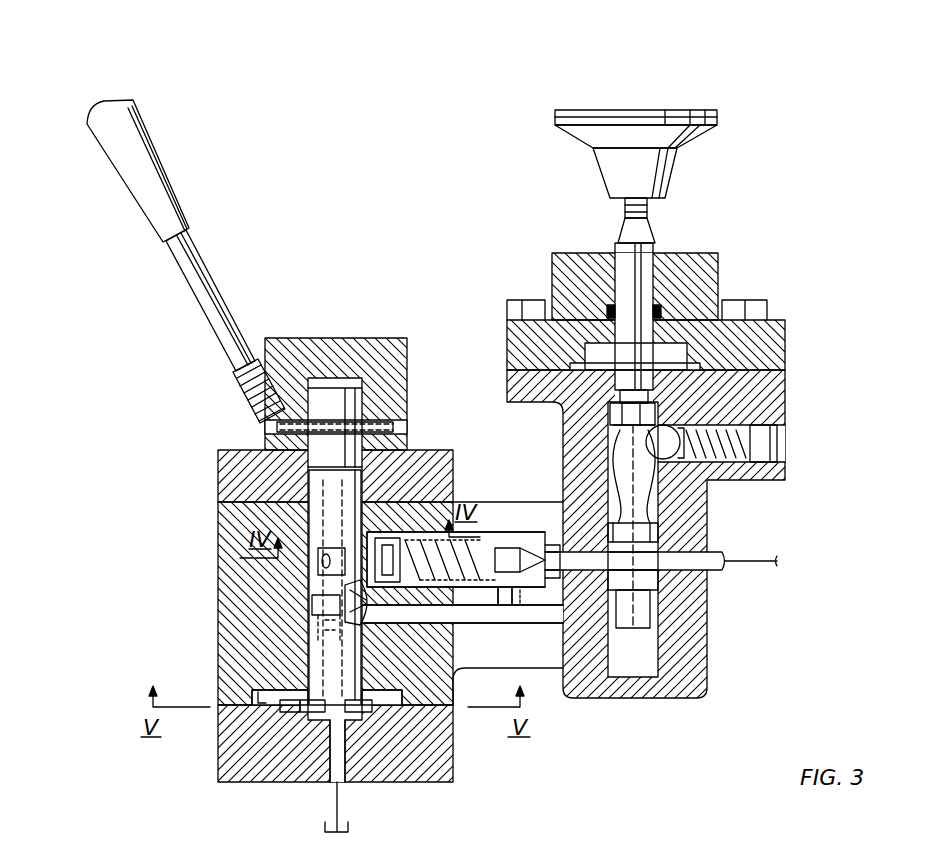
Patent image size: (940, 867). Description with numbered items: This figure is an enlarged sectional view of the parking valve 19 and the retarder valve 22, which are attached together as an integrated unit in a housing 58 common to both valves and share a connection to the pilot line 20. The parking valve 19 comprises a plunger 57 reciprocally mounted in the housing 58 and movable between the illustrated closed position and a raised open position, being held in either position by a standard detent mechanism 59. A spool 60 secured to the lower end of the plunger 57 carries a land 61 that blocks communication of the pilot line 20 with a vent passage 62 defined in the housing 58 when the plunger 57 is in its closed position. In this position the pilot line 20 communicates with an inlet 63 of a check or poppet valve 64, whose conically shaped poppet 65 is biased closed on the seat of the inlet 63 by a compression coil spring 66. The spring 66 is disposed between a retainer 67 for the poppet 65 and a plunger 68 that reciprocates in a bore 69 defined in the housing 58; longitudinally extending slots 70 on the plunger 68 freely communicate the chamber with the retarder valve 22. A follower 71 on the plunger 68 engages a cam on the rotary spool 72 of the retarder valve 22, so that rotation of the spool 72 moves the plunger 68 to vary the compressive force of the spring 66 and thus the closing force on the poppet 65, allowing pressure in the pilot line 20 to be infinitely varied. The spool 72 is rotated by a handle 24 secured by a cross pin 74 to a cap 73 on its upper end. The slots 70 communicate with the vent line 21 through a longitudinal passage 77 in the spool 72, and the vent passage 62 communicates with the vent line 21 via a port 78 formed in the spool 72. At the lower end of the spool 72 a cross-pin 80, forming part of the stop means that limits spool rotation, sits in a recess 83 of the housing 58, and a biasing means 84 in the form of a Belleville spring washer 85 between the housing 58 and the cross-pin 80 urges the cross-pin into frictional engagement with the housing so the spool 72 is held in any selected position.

The parking valve 19 is at (782, 255).
The pilot line 20 is at (715, 553).
The vent line 21 is at (333, 818).
The retarder valve 22 is at (183, 443).
The handle 24 is at (164, 170).
The plunger 57 is at (658, 228).
The housing 58 is at (718, 678).
The detent mechanism 59 is at (758, 401).
The spool 60 is at (672, 525).
The land 61 is at (655, 580).
The vent passage 62 is at (490, 623).
The inlet 63 is at (563, 556).
The check or poppet valve 64 is at (525, 608).
The poppet 65 is at (530, 548).
The compression coil spring 66 is at (492, 535).
The retainer 67 is at (505, 540).
The plunger 68 is at (400, 538).
The bore 69 is at (505, 598).
The slots 70 is at (445, 520).
The follower 71 is at (345, 566).
The rotary spool 72 is at (310, 600).
The cap 73 is at (342, 345).
The cross pin 74 is at (277, 428).
The longitudinal passage 77 is at (318, 632).
The port 78 is at (362, 605).
The cross-pin 80 is at (385, 705).
The recess 83 is at (252, 690).
The biasing means 84 is at (283, 712).
The Belleville spring washer 85 is at (305, 720).